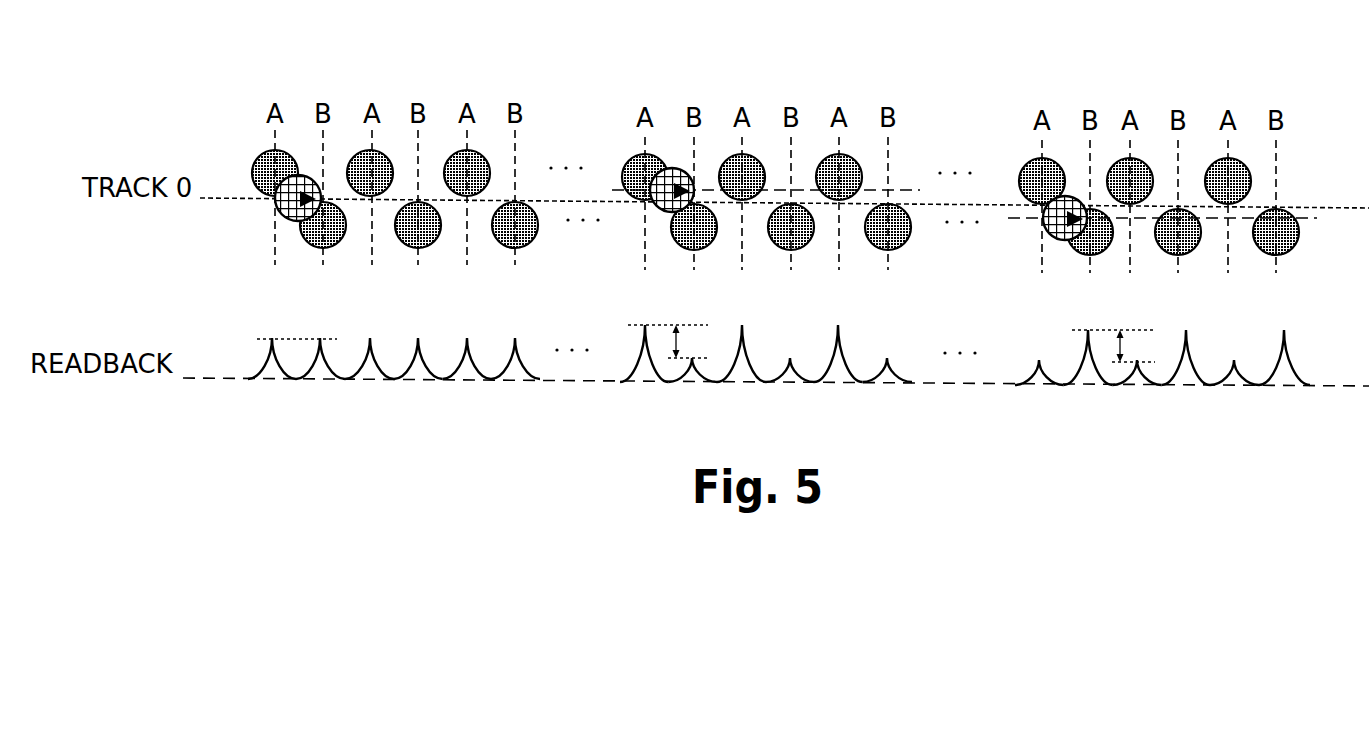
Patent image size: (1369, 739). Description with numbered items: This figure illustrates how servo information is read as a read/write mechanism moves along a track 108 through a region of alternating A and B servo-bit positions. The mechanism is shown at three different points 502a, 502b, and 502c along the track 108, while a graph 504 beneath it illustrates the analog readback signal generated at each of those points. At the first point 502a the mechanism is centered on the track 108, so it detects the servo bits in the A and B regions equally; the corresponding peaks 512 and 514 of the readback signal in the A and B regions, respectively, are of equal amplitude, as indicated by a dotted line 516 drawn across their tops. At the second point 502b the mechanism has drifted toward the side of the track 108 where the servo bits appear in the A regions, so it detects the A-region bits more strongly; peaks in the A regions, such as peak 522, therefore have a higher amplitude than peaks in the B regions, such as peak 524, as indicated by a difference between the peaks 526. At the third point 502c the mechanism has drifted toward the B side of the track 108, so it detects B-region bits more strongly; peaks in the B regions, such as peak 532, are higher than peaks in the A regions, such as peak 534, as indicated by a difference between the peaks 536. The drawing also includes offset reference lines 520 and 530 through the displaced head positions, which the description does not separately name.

The track 108 is at (243, 200).
The point 502a is at (308, 173).
The point 502b is at (685, 172).
The point 502c is at (1070, 197).
The graph 504 is at (223, 378).
The peak 512 is at (272, 340).
The peak 514 is at (322, 338).
The dotted line 516 is at (293, 337).
The offset head track line 520 is at (902, 187).
The peak 522 is at (645, 325).
The peak 524 is at (692, 357).
The difference between the peaks 526 is at (678, 332).
The offset head track line 530 is at (1308, 222).
The peak 532 is at (1088, 330).
The peak 534 is at (1138, 363).
The difference between the peaks 536 is at (1122, 337).